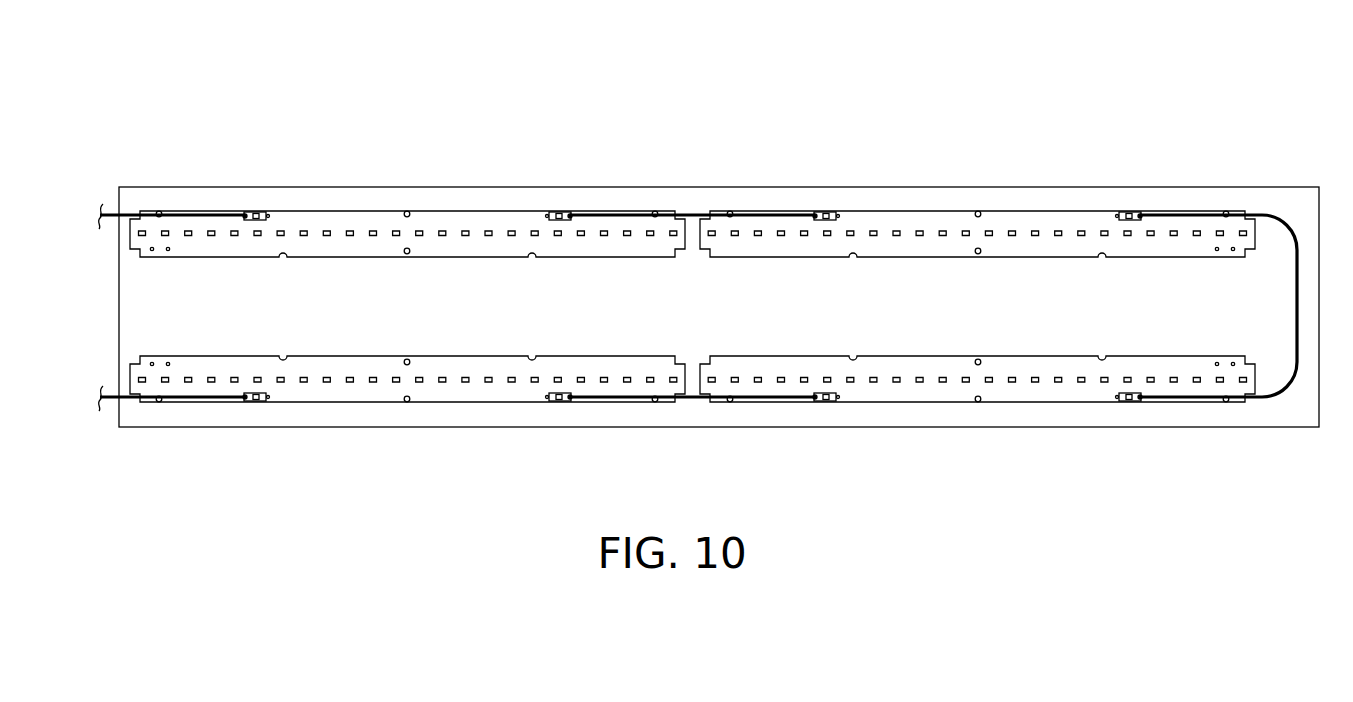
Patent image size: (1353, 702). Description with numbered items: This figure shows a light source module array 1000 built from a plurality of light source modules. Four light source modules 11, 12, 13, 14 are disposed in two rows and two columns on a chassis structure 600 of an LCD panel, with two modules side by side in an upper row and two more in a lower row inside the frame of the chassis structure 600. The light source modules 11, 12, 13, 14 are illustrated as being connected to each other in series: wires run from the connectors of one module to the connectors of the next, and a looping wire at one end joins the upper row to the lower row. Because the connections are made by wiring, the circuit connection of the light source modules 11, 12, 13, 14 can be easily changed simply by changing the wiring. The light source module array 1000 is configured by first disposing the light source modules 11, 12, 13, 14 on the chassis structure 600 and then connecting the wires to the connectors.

The light source module array 1000 is at (1000, 172).
The chassis structure 600 is at (462, 200).
The light source module 11 is at (320, 203).
The light source module 12 is at (890, 203).
The light source module 13 is at (891, 410).
The light source module 14 is at (319, 410).